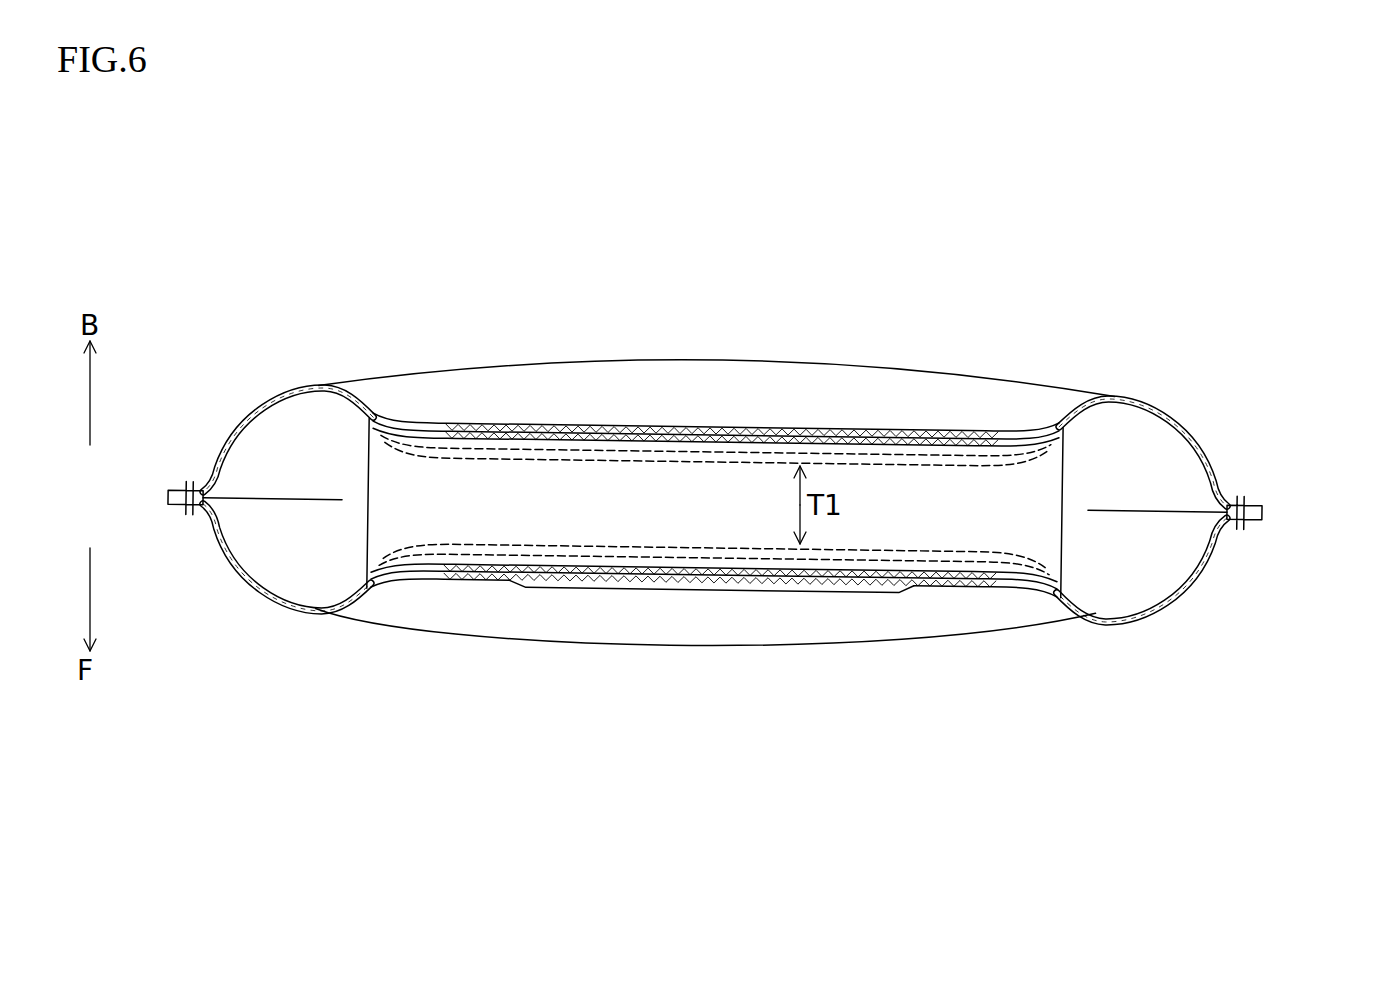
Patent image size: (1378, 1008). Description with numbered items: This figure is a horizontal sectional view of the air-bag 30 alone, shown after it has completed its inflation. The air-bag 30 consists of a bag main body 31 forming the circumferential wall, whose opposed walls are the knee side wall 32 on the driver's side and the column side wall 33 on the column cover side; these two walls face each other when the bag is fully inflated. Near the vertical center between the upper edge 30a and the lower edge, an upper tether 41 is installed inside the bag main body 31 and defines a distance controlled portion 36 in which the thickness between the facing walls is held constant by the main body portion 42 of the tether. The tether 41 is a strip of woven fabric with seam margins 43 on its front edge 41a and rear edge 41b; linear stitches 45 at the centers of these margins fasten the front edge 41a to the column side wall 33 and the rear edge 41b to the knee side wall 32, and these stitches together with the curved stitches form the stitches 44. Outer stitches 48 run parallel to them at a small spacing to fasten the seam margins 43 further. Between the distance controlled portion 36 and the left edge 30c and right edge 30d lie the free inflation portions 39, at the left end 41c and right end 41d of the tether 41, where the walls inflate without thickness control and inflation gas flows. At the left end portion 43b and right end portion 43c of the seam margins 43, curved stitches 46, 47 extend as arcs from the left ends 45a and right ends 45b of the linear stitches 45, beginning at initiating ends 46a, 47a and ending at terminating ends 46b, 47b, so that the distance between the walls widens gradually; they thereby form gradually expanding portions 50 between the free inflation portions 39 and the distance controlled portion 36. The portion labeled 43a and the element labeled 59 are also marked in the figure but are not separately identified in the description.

The air-bag 30 is at (192, 297).
The upper edge 30a is at (332, 512).
The left edge 30c is at (183, 530).
The right edge 30d is at (1241, 537).
The bag main body 31 is at (273, 420).
The knee side wall 32 is at (629, 375).
The column side wall 33 is at (612, 623).
The distance controlled portion 36 is at (947, 518).
The free inflation portion 39 is at (277, 521).
The upper tether 41 is at (392, 510).
The front edge 41a is at (931, 572).
The rear edge 41b is at (808, 255).
The left end 41c is at (355, 472).
The right end 41d is at (1078, 497).
The main body portion 42 is at (585, 478).
The seam margin 43 is at (721, 505).
The base fabric main portion 43a is at (706, 426).
The left end portion 43b is at (397, 425).
The right end portion 43c is at (1044, 432).
The stitch 44 is at (753, 462).
The linear stitch 45 is at (783, 529).
The left end 45a is at (437, 543).
The right end 45b is at (1103, 428).
The curved stitch 46 is at (352, 422).
The initiating end 46a is at (583, 505).
The terminating end 46b is at (387, 418).
The curved stitch 47 is at (1078, 422).
The initiating end 47a is at (1288, 510).
The terminating end 47b is at (1090, 428).
The outer stitch 48 is at (898, 457).
The gradually expanding portion 50 is at (1046, 600).
The reinforcing cloth 59 is at (784, 585).